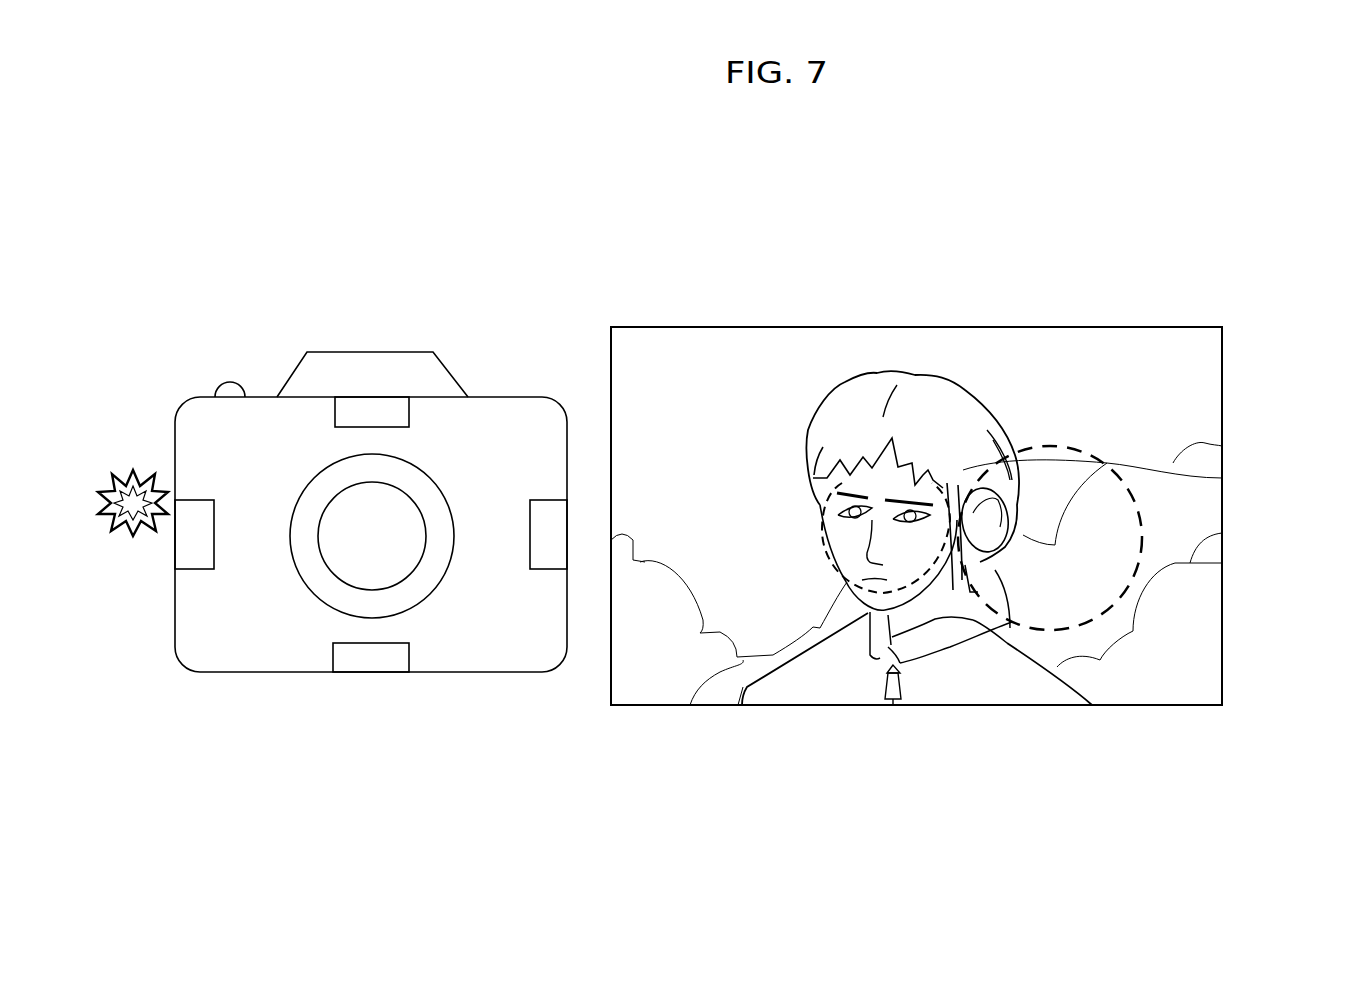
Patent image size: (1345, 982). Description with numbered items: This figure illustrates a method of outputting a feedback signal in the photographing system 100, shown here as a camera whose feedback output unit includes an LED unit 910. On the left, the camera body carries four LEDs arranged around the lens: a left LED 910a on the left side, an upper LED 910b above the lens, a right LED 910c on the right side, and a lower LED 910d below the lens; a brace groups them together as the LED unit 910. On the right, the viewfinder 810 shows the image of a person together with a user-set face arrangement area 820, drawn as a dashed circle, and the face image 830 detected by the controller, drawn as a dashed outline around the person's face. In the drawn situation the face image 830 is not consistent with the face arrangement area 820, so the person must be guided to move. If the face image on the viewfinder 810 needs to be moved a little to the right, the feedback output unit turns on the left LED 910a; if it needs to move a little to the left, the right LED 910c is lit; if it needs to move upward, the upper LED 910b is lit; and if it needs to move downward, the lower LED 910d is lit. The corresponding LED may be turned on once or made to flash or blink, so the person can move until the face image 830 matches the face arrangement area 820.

The photographing system 100 is at (510, 672).
The LED unit 910 is at (371, 609).
The left LED 910a is at (204, 558).
The upper LED 910b is at (340, 414).
The right LED 910c is at (537, 562).
The lower LED 910d is at (352, 655).
The viewfinder 810 is at (961, 559).
The face arrangement area 820 is at (1105, 475).
The face image 830 is at (870, 443).